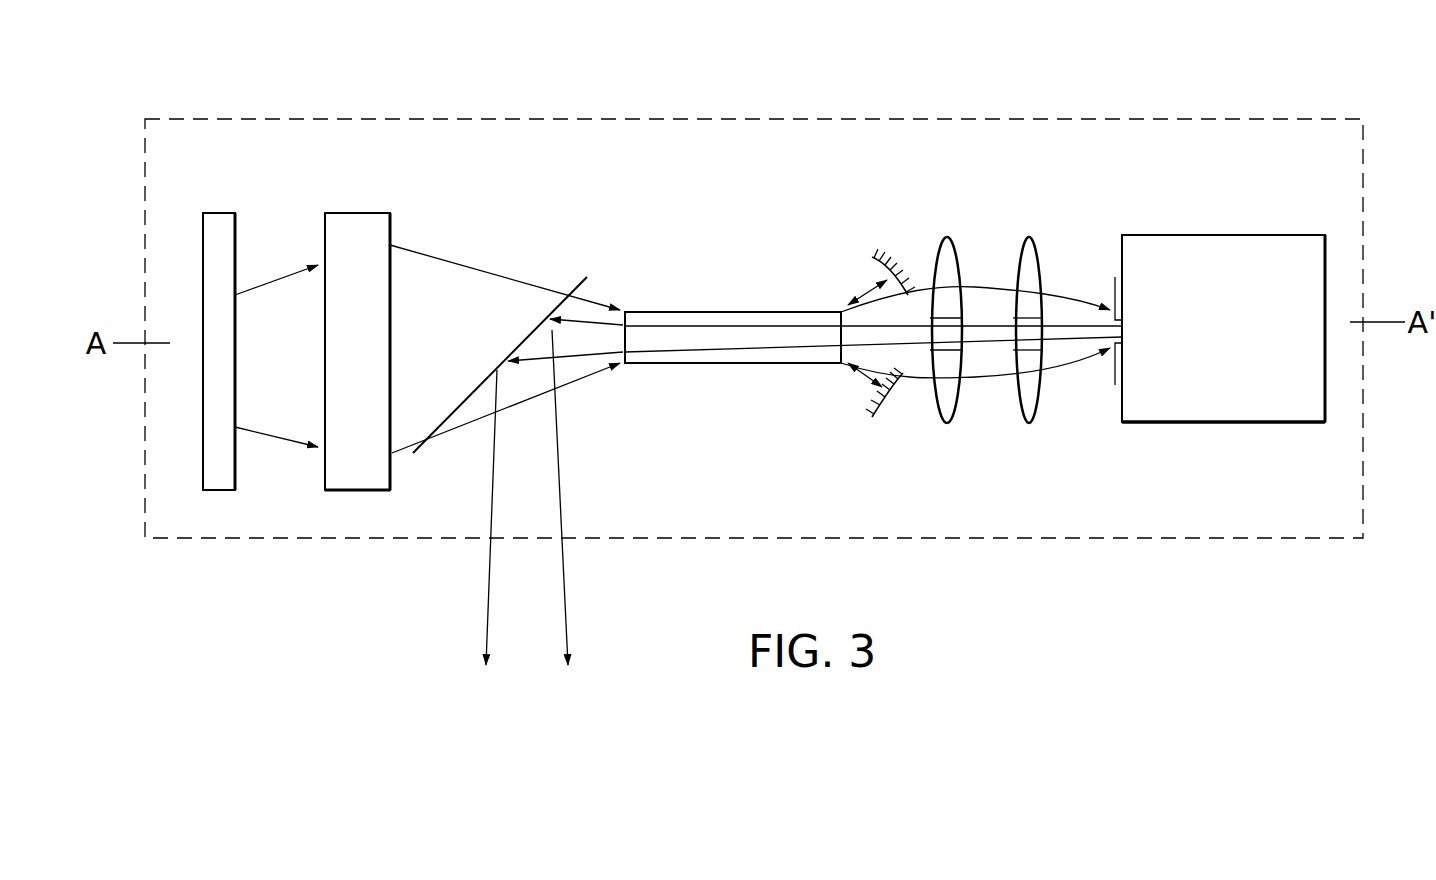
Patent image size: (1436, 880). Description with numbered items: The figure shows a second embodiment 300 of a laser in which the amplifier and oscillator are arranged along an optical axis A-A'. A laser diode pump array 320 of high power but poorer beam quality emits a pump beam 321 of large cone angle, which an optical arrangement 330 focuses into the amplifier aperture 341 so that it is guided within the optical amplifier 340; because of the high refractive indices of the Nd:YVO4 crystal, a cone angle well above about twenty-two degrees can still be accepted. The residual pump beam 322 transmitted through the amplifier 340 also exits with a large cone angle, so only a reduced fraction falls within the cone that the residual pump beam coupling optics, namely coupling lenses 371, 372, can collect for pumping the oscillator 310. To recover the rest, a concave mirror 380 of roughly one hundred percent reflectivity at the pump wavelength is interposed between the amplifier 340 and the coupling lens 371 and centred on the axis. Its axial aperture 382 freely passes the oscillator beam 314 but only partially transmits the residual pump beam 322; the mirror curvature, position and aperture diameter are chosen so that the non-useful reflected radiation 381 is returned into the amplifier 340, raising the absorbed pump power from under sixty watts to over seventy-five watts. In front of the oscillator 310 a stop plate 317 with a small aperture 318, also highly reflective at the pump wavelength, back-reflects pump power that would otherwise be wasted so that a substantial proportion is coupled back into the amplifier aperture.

The second embodiment 300 is at (598, 118).
The oscillator 310 is at (1192, 270).
The oscillator beam 314 is at (980, 340).
The stop plate 317 is at (1115, 373).
The small aperture 318 is at (1124, 325).
The laser diode pump array 320 is at (213, 212).
The pump beam 321 is at (273, 257).
The residual pump beam 322 is at (847, 367).
The optical arrangement 330 is at (345, 212).
The optical amplifier 340 is at (728, 318).
The amplifier aperture 341 is at (623, 350).
The coupling lens 371 is at (955, 252).
The coupling lens 372 is at (1042, 252).
The concave mirror 380 is at (872, 257).
The reflected radiation 381 is at (868, 288).
The axial aperture 382 is at (905, 357).